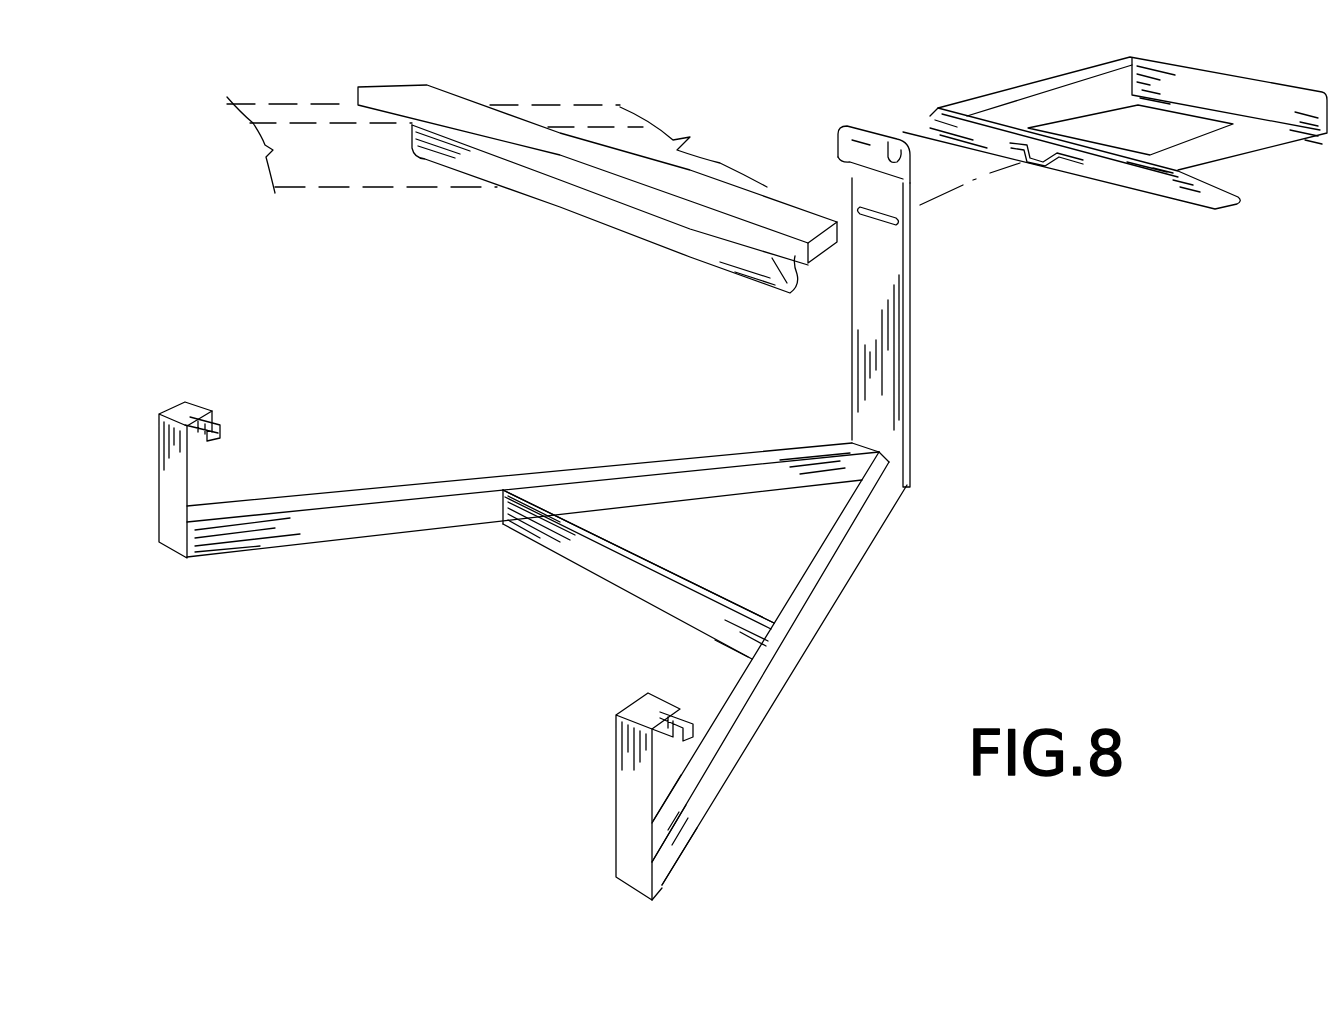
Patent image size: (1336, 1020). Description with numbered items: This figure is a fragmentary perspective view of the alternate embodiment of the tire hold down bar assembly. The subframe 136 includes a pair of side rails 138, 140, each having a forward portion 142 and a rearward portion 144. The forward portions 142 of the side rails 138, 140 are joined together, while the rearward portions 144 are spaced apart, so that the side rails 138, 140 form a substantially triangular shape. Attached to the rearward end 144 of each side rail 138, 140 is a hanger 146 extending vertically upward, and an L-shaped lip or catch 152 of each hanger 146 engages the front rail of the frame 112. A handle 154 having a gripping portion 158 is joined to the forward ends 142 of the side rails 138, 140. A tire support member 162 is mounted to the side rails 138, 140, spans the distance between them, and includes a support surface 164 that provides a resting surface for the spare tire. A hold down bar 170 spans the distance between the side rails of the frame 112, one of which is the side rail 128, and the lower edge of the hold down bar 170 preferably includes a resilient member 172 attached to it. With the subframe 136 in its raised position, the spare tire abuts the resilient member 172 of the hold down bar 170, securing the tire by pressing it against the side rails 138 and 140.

The frame 112 is at (593, 105).
The side rail 128 is at (257, 103).
The subframe 136 is at (485, 385).
The side rail 138 is at (363, 492).
The side rail 140 is at (808, 647).
The forward portion 142 is at (897, 503).
The rearward portion 144 is at (687, 838).
The hanger 146 is at (159, 455).
The L-shaped lip or catch 152 is at (230, 430).
The handle 154 is at (910, 357).
The gripping portion 158 is at (873, 130).
The tire support member 162 is at (568, 563).
The support surface 164 is at (637, 557).
The hold down bar 170 is at (450, 93).
The resilient member 172 is at (613, 228).